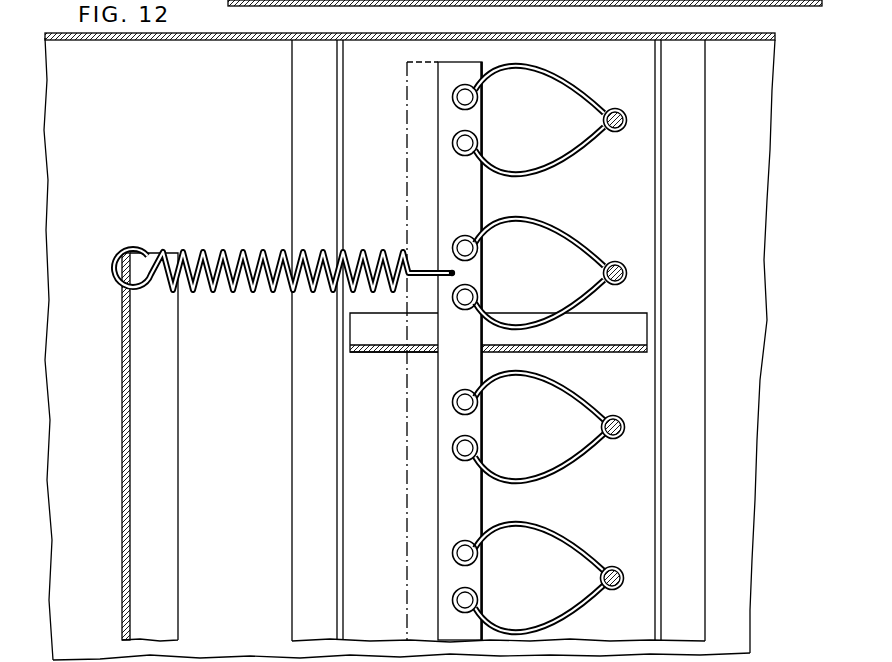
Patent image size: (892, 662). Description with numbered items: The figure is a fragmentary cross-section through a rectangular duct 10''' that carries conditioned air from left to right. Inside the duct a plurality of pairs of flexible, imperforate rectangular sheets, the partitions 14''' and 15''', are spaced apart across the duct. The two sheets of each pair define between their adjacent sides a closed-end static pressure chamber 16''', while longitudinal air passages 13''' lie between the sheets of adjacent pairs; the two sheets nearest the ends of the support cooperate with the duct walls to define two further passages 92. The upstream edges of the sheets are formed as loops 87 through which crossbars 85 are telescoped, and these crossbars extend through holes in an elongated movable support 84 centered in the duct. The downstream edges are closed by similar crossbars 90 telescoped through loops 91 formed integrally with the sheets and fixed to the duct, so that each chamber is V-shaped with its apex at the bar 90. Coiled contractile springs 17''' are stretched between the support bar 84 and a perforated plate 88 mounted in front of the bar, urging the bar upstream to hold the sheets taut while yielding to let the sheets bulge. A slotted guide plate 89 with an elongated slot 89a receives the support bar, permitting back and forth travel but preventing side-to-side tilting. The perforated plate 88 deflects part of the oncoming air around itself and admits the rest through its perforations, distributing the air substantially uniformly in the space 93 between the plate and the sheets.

The duct 10''' is at (410, 24).
The passages 92 is at (562, 322).
The partition 15''' is at (555, 311).
The partition 14''' is at (562, 379).
The static pressure chamber 16''' is at (562, 322).
The longitudinal air passage 13''' is at (531, 322).
The loops 91 is at (617, 108).
The crossbars 90 is at (627, 120).
The loops 87 is at (464, 156).
The crossbars 85 is at (464, 143).
The movable support 84 is at (452, 208).
The slotted guide plate 89 is at (582, 353).
The elongated slot 89a is at (428, 352).
The space 93 is at (388, 418).
The coiled contractile spring 17''' is at (284, 291).
The perforated plate 88 is at (130, 483).